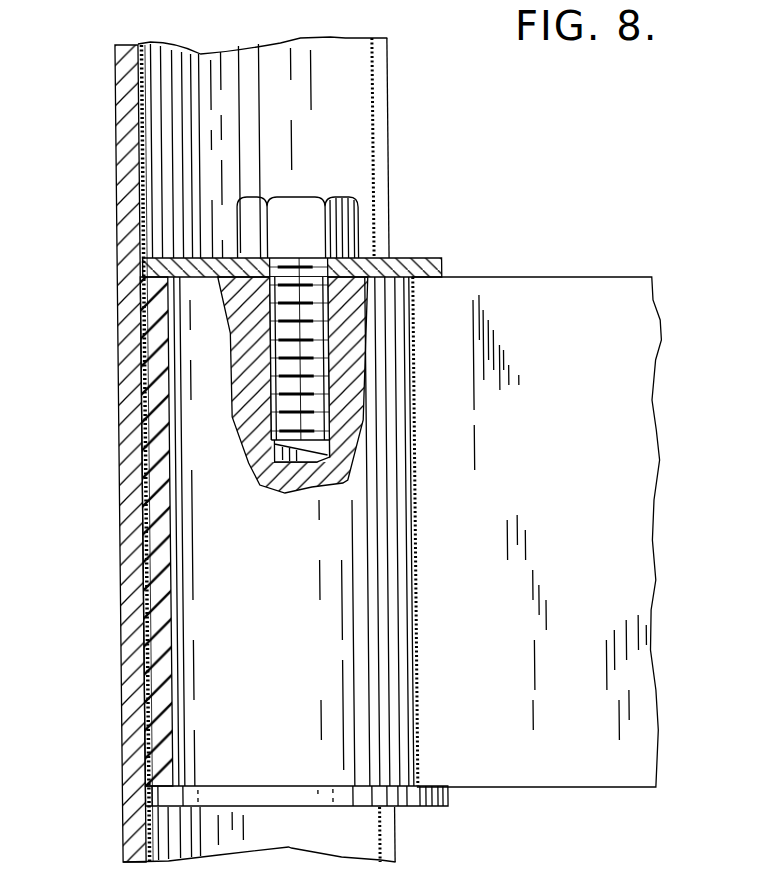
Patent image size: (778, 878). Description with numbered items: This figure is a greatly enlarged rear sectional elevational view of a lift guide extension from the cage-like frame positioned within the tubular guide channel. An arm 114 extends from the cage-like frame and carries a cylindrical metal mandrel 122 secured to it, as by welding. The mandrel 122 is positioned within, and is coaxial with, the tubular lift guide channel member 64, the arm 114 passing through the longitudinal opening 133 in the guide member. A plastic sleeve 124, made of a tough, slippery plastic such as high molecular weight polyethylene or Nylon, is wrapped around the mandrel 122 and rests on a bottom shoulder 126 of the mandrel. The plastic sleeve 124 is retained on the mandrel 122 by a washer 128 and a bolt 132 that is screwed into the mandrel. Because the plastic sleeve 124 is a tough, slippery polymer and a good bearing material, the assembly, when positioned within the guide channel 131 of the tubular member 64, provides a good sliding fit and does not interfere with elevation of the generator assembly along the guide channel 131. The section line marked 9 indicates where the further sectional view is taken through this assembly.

The tubular lift guide channel member 64 is at (120, 128).
The guide channel 131 is at (150, 203).
The longitudinal opening 133 is at (387, 138).
The bolt 132 is at (300, 207).
The washer 128 is at (428, 259).
The arm 114 is at (530, 283).
The cylindrical metal mandrel 122 is at (405, 584).
The plastic sleeve 124 is at (147, 552).
The bottom shoulder 126 is at (425, 806).
The section line 9- 9 is at (103, 369).